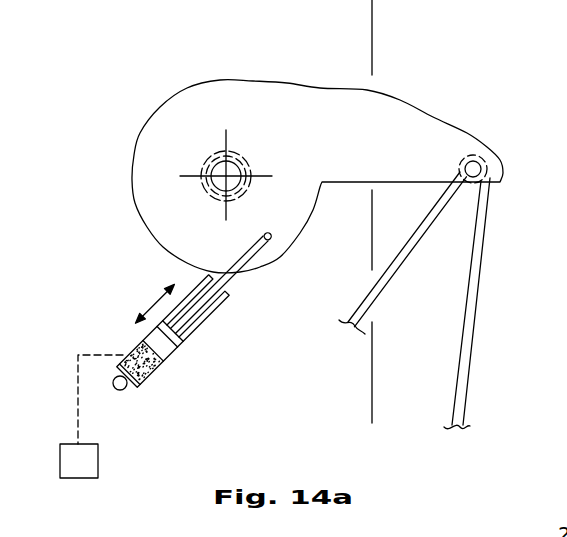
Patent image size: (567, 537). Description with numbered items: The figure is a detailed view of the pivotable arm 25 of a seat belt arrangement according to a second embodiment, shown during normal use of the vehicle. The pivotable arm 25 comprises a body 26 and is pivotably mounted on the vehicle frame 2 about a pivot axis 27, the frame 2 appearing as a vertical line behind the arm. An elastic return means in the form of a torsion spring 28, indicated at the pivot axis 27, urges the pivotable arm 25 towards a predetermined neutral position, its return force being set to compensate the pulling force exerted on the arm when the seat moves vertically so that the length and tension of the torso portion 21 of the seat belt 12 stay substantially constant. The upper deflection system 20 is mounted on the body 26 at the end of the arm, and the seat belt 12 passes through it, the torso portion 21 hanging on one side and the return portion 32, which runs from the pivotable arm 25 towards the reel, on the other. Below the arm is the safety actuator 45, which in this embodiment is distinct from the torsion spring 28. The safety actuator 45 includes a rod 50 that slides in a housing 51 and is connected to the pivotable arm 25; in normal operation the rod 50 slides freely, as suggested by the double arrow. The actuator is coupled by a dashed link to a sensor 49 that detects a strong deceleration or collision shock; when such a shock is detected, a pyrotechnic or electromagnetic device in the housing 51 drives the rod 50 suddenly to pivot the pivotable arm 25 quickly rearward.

The frame 2 is at (345, 0).
The pivotable arm 25 is at (391, 93).
The pivot axis 27 is at (223, 173).
The torsion spring 28 is at (240, 160).
The body 26 is at (433, 147).
The torso portion 21 is at (466, 390).
The upper deflection system 20 is at (499, 194).
The seat belt 12 is at (478, 312).
The return portion 32 is at (410, 247).
The safety actuator 45 is at (221, 333).
The rod 50 is at (231, 277).
The housing 51 is at (157, 370).
The sensor 49 is at (87, 462).